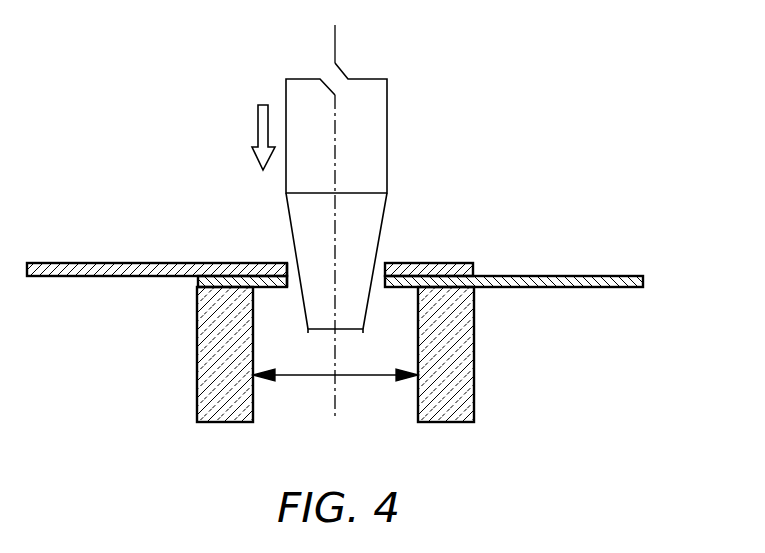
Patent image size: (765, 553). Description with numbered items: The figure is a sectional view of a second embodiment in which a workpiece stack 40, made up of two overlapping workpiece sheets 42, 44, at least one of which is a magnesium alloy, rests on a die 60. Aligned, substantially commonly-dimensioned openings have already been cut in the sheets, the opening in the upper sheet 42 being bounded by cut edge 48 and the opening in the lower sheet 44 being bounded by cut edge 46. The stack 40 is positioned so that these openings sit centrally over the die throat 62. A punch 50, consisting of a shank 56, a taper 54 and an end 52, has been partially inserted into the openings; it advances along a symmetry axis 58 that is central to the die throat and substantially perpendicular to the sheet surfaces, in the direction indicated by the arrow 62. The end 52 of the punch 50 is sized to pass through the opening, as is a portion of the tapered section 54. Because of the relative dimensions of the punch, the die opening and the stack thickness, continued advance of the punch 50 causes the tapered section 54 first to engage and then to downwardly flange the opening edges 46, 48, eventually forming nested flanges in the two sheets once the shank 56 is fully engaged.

The workpiece stack 40 is at (339, 202).
The workpiece sheet 42 is at (465, 263).
The workpiece sheet 44 is at (420, 244).
The cut edge 46 is at (287, 282).
The cut edge 48 is at (288, 264).
The punch 50 is at (416, 203).
The end 52 is at (351, 329).
The taper 54 is at (385, 215).
The shank 56 is at (387, 148).
The symmetry axis 58 is at (335, 55).
The die 60 is at (474, 327).
The die throat 62 is at (253, 136).